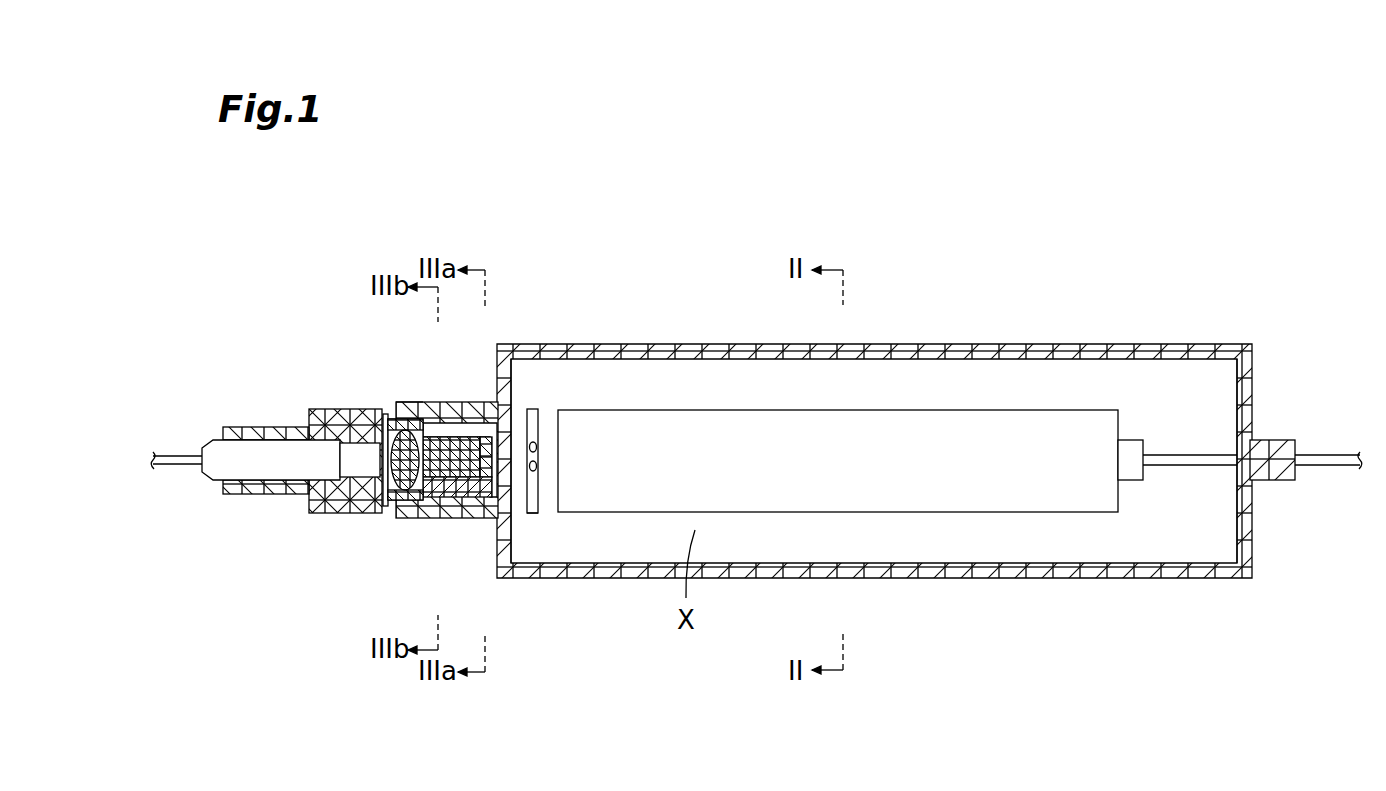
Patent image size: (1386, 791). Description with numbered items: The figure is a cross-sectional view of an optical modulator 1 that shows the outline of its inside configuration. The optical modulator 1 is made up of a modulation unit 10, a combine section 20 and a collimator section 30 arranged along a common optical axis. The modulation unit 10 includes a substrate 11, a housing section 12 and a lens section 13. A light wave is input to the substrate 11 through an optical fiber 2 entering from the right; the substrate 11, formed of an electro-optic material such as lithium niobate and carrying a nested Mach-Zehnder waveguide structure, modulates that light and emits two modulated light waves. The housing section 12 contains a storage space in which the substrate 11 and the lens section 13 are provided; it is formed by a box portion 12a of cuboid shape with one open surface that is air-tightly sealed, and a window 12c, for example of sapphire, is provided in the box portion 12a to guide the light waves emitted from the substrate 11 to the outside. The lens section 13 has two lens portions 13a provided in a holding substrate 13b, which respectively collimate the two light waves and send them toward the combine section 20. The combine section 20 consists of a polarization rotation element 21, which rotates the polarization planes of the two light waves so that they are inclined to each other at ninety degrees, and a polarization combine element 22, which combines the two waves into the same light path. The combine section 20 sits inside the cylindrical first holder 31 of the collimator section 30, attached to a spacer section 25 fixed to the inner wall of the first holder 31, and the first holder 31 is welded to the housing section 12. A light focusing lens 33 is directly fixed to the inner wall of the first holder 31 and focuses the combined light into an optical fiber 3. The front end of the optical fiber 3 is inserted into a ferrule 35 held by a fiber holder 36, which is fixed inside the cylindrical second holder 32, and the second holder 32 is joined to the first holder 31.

The optical modulator 1 is at (1231, 237).
The optical fiber 2 is at (1325, 457).
The optical fiber 3 is at (173, 460).
The modulation unit 10 is at (978, 320).
The substrate 11 is at (1020, 478).
The housing section 12 is at (1138, 580).
The box portion 12a is at (1222, 578).
The window 12c is at (513, 447).
The lens section 13 is at (518, 510).
The lens portions 13a is at (537, 462).
The holding substrate 13b is at (534, 514).
The combine section 20 is at (458, 437).
The polarization rotation element 21 is at (490, 477).
The polarization combine element 22 is at (412, 492).
The spacer section 25 is at (458, 490).
The collimator section 30 is at (357, 396).
The first holder 31 is at (425, 410).
The second holder 32 is at (308, 413).
The light focusing lens 33 is at (390, 500).
The ferrule 35 is at (345, 488).
The fiber holder 36 is at (230, 467).